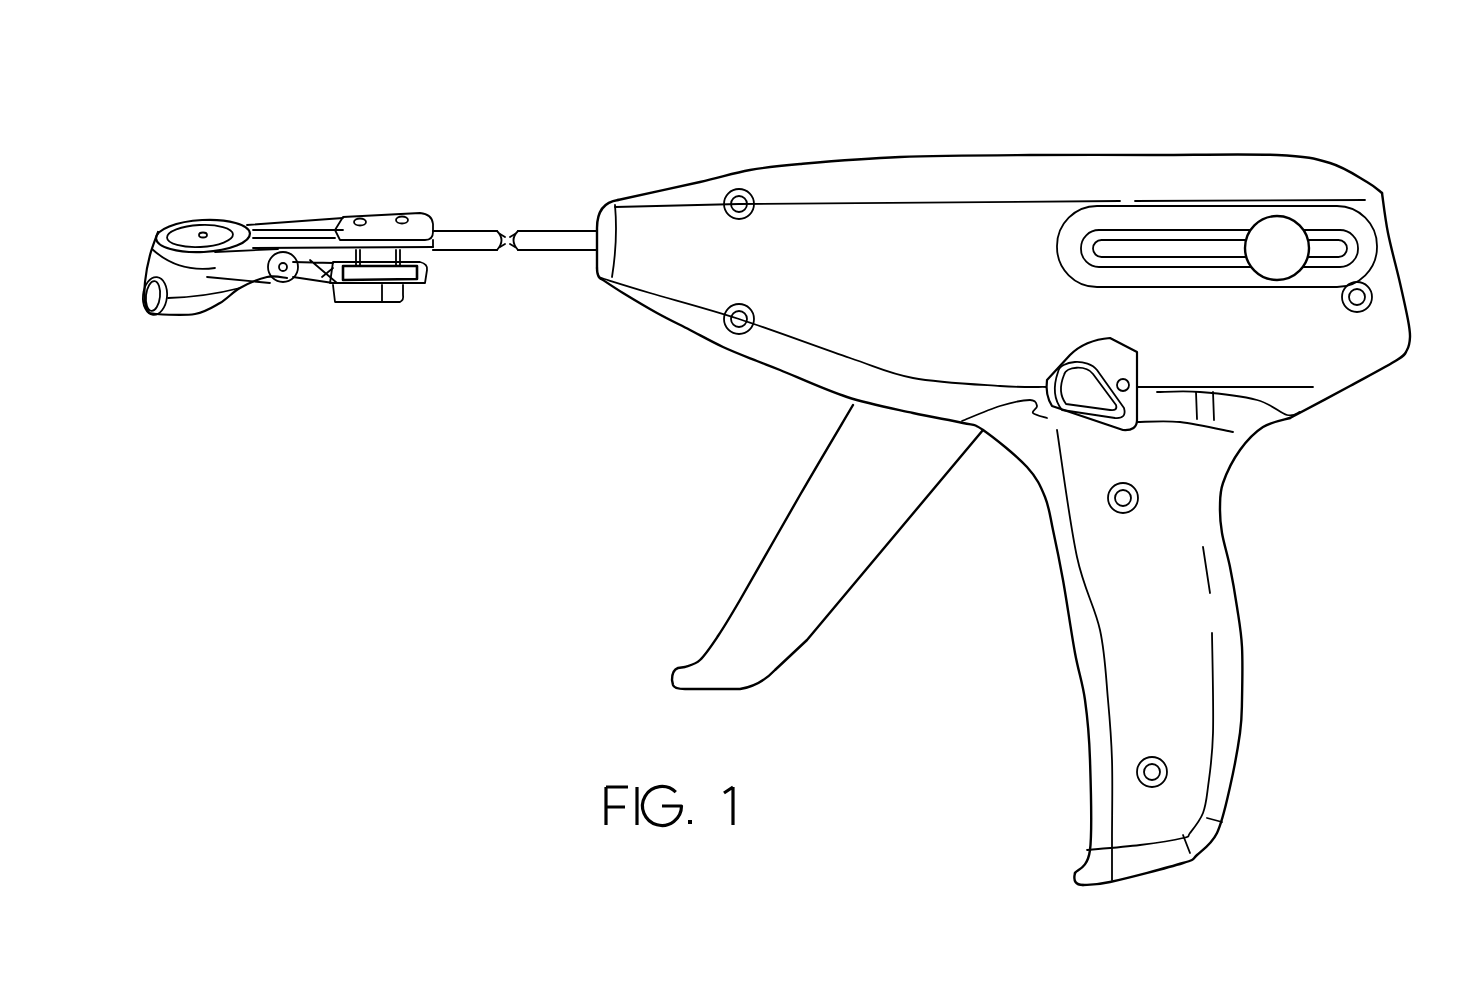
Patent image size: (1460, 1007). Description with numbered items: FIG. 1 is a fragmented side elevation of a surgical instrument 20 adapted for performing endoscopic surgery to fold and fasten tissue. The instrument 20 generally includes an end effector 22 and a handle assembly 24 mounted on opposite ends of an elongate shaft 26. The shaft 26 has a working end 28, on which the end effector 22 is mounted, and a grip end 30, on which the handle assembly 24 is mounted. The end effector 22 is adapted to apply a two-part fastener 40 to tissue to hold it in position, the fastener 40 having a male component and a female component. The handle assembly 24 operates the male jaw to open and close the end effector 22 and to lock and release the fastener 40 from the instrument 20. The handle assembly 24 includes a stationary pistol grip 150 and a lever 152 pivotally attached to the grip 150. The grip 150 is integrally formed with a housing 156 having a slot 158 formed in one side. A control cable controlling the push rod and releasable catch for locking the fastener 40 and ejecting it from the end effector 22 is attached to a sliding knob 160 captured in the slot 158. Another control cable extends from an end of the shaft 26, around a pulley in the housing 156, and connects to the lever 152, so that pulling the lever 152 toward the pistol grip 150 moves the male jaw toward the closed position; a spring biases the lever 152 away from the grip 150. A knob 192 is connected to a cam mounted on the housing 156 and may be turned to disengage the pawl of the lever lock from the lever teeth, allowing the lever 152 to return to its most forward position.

The surgical instrument 20 is at (530, 147).
The end effector 22 is at (163, 316).
The handle assembly 24 is at (1026, 481).
The elongate shaft 26 is at (470, 253).
The working end 28 is at (283, 226).
The grip end 30 is at (593, 226).
The two-part fastener 40 is at (322, 280).
The stationary pistol grip 150 is at (1243, 670).
The lever 152 is at (807, 637).
The housing 156 is at (1095, 153).
The slot 158 is at (1217, 243).
The sliding knob 160 is at (1305, 232).
The knob 192 is at (1050, 422).